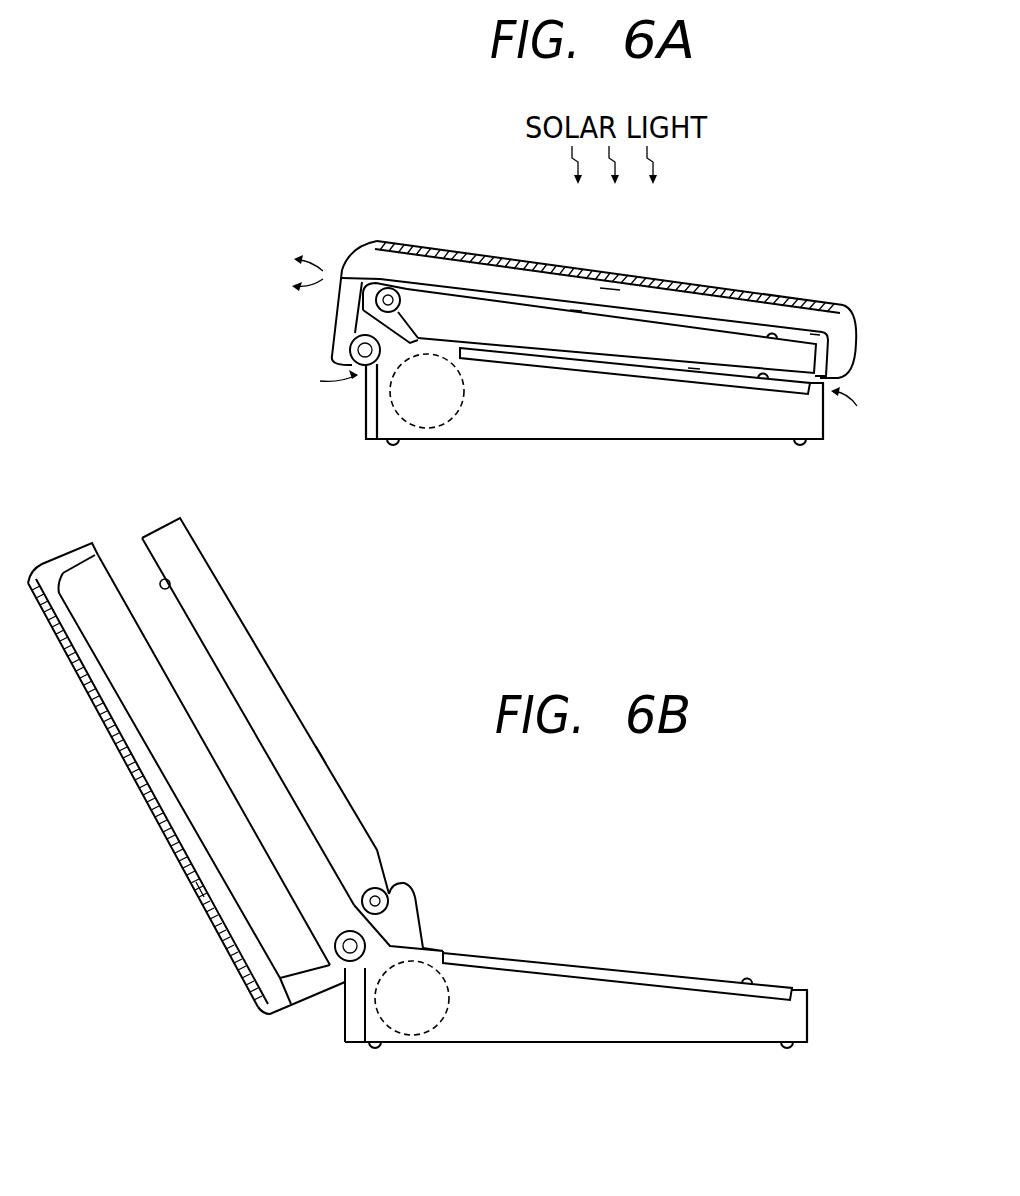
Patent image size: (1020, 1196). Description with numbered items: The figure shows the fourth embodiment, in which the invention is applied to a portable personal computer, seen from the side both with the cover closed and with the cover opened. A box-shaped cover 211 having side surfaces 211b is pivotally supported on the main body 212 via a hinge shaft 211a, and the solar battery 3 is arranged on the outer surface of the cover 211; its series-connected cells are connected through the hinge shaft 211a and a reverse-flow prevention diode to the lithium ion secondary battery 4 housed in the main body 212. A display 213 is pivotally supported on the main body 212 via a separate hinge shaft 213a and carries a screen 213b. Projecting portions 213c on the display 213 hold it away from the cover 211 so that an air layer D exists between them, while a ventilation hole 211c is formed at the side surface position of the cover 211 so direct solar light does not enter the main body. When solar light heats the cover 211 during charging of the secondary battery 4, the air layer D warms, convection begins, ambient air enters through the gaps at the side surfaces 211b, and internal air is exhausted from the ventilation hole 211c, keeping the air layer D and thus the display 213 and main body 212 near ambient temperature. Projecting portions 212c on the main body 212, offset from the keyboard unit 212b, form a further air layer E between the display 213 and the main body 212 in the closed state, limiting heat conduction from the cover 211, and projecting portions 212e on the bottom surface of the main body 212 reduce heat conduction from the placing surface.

In FIG. 6A, the solar battery 3 is at (612, 292).
In FIG. 6B, the solar battery 3 is at (196, 890).
In FIG. 6A, the lithium ion secondary battery 4 is at (450, 412).
In FIG. 6B, the lithium ion secondary battery 4 is at (420, 1022).
In FIG. 6A, the cover 211 is at (498, 272).
In FIG. 6B, the cover 211 is at (155, 796).
In FIG. 6A, the hinge shaft 211a is at (362, 368).
In FIG. 6B, the hinge shaft 211a is at (349, 960).
In FIG. 6A, the side surfaces 211b is at (335, 326).
In FIG. 6B, the side surfaces 211b is at (60, 562).
In FIG. 6A, the ventilation hole 211c is at (343, 271).
In FIG. 6B, the ventilation hole 211c is at (287, 1016).
In FIG. 6A, the main body 212 is at (630, 428).
In FIG. 6B, the main body 212 is at (638, 1040).
In FIG. 6A, the keyboard unit 212b is at (572, 362).
In FIG. 6B, the keyboard unit 212b is at (585, 970).
In FIG. 6A, the projecting portions 212c is at (763, 384).
In FIG. 6B, the projecting portions 212c is at (748, 980).
In FIG. 6A, the projecting portions 212e is at (392, 448).
In FIG. 6A, the display 213 is at (670, 336).
In FIG. 6B, the display 213 is at (262, 682).
In FIG. 6A, the hinge shaft 213a is at (388, 298).
In FIG. 6B, the hinge shaft 213a is at (377, 900).
In FIG. 6B, the screen 213b is at (319, 758).
In FIG. 6A, the projecting portions 213c is at (771, 335).
In FIG. 6B, the projecting portions 213c is at (168, 580).
In FIG. 6A, the air layer D is at (576, 310).
In FIG. 6A, the air layer E is at (694, 370).